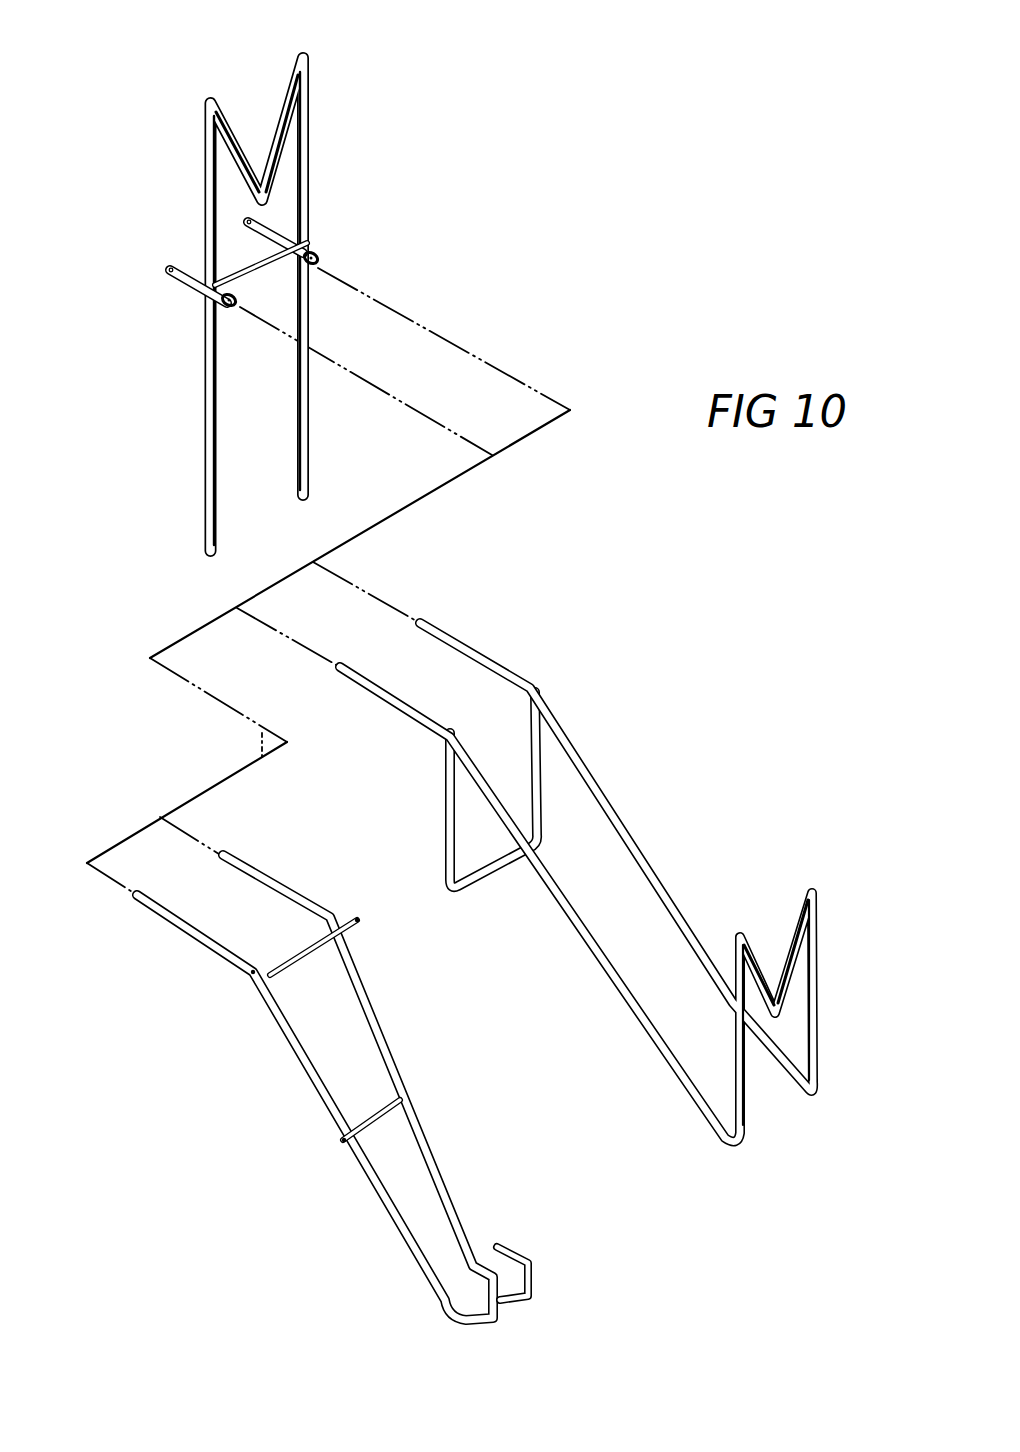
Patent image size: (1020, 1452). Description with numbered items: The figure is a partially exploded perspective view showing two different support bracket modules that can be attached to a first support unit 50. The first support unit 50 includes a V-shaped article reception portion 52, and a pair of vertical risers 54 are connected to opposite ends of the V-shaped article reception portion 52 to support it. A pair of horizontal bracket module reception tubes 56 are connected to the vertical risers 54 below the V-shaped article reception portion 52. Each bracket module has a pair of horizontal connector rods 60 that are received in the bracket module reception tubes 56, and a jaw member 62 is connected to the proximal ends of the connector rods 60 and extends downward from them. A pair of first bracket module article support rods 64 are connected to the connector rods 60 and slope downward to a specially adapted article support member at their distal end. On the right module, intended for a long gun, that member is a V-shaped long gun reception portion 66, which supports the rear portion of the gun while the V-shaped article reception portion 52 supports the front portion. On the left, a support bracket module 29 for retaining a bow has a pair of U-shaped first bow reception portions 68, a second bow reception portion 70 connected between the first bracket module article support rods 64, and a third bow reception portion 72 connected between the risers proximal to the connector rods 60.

The support bracket module 29 is at (241, 1023).
The first support unit 50 is at (190, 199).
The V-shaped article reception portion 52 is at (280, 100).
The vertical risers 54 is at (207, 447).
The horizontal bracket module reception tubes 56 is at (307, 232).
The horizontal connector rods 60 is at (453, 637).
The jaw member 62 is at (450, 883).
The first bracket module article support rods 64 is at (635, 840).
The V-shaped long gun reception portion 66 is at (787, 920).
The U-shaped first bow reception portions 68 is at (507, 1320).
The second bow reception portion 70 is at (343, 1130).
The third bow reception portion 72 is at (313, 957).